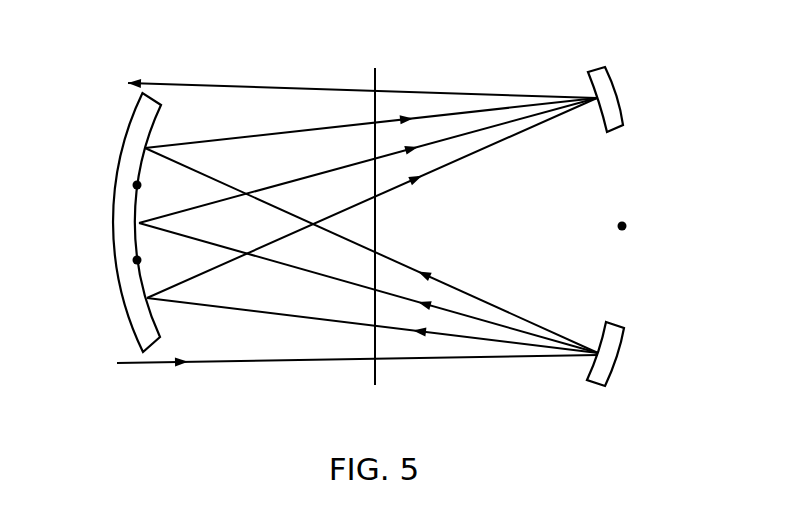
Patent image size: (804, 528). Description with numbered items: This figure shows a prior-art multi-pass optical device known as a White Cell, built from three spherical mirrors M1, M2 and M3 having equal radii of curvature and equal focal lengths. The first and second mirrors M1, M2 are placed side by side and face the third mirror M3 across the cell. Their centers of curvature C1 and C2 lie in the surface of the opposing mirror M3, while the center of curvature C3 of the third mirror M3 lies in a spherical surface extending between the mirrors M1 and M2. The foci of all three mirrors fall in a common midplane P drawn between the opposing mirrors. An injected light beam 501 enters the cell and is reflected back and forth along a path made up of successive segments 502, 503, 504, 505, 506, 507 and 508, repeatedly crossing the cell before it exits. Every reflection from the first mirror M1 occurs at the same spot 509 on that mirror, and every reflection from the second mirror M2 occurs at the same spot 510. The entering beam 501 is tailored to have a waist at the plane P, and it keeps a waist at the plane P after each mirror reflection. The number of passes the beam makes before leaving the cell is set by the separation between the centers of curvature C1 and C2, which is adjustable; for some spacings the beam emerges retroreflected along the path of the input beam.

The light beam 501 is at (357, 374).
The path segment 502 is at (371, 250).
The path segment 503 is at (371, 123).
The path segment 504 is at (368, 160).
The path segment 505 is at (368, 288).
The path segment 506 is at (372, 325).
The path segment 507 is at (372, 198).
The path segment 508 is at (362, 77).
The reflection spot on first mirror 509 is at (595, 377).
The reflection spot on second mirror 510 is at (596, 75).
The first mirror M1 is at (626, 354).
The second mirror M2 is at (626, 99).
The third mirror M3 is at (113, 222).
The center of curvature of M1 C1 is at (158, 261).
The center of curvature of M2 C2 is at (158, 186).
The center of curvature of M3 C3 is at (642, 226).
The midplane P is at (373, 242).